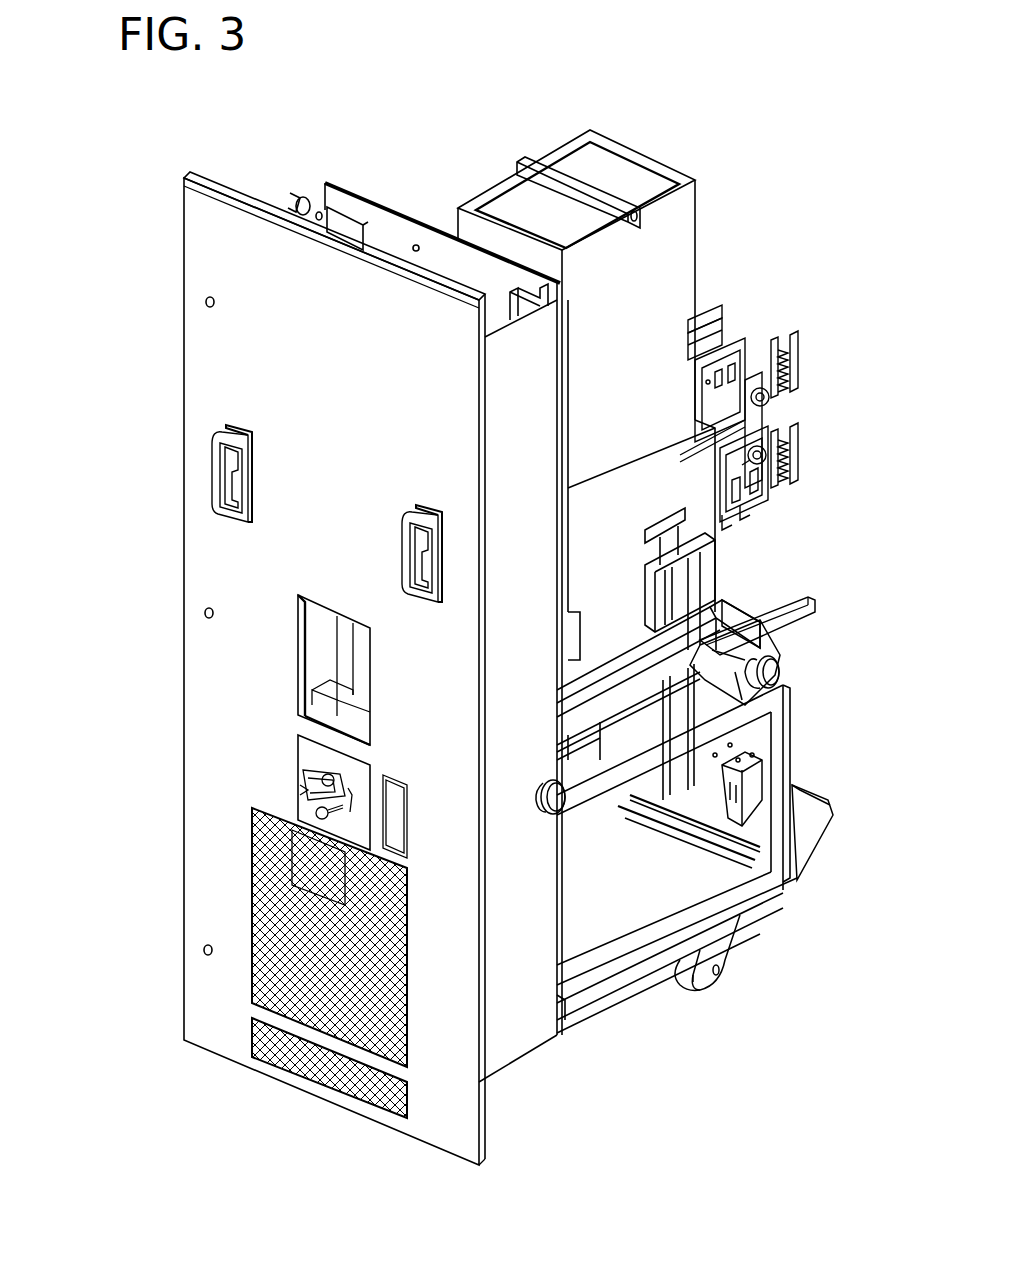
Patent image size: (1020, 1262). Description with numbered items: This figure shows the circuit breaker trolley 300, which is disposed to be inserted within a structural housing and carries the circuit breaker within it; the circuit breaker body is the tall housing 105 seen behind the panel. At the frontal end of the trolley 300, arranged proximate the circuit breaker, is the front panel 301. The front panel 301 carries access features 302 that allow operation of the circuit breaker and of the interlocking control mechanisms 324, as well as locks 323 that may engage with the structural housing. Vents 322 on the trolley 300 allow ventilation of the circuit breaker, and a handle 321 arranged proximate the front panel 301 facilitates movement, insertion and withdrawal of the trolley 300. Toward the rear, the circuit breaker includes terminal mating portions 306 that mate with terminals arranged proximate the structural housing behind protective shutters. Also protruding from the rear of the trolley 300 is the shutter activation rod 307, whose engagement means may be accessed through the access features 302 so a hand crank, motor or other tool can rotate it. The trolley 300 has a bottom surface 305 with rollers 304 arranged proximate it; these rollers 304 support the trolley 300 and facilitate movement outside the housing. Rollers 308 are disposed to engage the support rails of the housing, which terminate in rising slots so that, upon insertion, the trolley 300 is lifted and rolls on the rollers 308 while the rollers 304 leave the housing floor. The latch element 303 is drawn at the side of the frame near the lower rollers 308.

The circuit breaker trolley 300 is at (676, 72).
The front panel 301 is at (200, 219).
The access features 302 is at (290, 592).
The hook latch 303 is at (743, 785).
The rollers 304 is at (693, 980).
The bottom surface 305 is at (650, 886).
The terminal mating portions 306 is at (806, 331).
The shutter activation rod 307 is at (790, 610).
The rollers 308 is at (784, 660).
The handle 321 is at (405, 555).
The vents 322 is at (413, 868).
The locks 323 is at (206, 300).
The interlocking control mechanisms 324 is at (354, 780).
The housing 105 is at (648, 511).